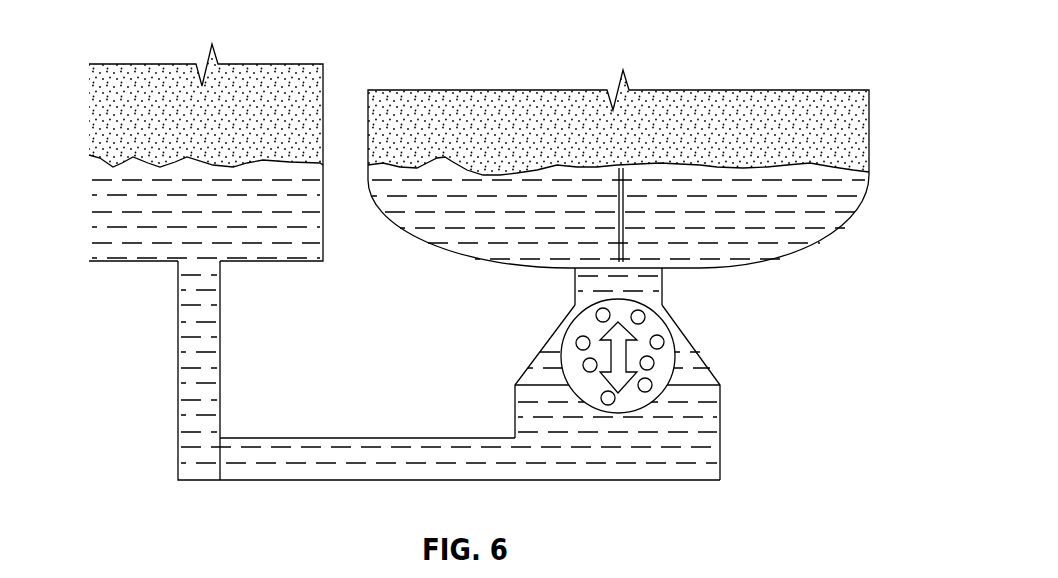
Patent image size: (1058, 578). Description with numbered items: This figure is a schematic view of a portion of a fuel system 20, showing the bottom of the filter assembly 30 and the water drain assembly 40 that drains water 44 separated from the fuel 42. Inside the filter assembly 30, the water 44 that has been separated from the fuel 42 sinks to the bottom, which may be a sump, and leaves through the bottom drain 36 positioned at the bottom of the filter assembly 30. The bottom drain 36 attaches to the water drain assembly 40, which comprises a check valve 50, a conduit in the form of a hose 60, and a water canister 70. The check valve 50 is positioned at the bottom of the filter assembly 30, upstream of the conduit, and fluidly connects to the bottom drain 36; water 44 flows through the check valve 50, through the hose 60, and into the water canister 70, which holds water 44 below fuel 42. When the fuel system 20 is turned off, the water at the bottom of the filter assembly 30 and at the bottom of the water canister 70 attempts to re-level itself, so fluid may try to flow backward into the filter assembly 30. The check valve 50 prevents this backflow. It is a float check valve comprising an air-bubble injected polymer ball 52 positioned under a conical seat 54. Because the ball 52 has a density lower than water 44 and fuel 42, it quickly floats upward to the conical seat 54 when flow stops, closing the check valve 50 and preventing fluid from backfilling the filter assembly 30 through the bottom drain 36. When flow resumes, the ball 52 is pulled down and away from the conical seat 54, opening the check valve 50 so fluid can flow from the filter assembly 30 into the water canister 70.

The fuel system 20 is at (476, 244).
The filter assembly 30 is at (476, 166).
The bottom drain 36 is at (643, 270).
The water drain assembly 40 is at (369, 262).
The fuel 42 is at (113, 110).
The water 44 is at (113, 222).
The check valve 50 is at (625, 389).
The ball 52 is at (678, 344).
The conical seat 54 is at (547, 352).
The hose 60 is at (178, 368).
The water canister 70 is at (88, 170).